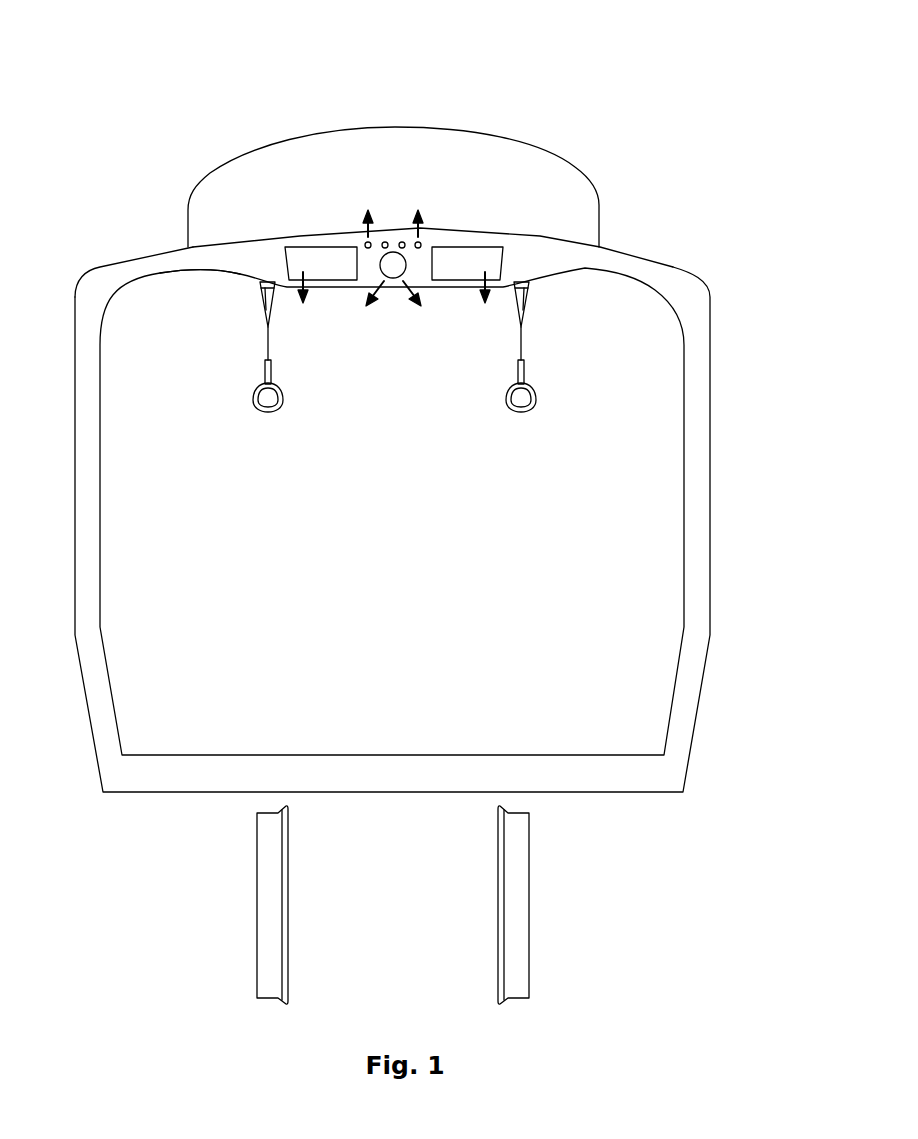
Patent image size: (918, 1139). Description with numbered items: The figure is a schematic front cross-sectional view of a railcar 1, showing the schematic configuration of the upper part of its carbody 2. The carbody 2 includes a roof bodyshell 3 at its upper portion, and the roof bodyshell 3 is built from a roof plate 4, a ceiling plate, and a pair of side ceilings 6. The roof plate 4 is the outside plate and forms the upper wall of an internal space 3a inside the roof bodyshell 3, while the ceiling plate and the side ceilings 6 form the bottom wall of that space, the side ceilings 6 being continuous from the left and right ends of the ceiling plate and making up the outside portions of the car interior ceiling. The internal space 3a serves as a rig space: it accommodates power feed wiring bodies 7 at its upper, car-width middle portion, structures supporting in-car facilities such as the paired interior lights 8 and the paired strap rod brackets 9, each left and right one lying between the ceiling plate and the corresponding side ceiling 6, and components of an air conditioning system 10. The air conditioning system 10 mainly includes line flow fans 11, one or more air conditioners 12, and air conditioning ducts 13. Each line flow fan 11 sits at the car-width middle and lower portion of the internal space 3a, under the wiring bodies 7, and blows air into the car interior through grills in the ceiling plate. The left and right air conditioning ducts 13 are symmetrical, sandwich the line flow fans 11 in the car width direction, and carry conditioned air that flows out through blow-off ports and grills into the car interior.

The railcar 1 is at (672, 120).
The carbody 2 is at (712, 295).
The roof bodyshell 3 is at (648, 255).
The internal space 3a is at (227, 257).
The roof plate 4 is at (138, 257).
The side ceiling 6 is at (178, 272).
The power feed wiring body 7 is at (393, 233).
The interior light 8 is at (261, 285).
The strap rod bracket 9 is at (262, 307).
The air conditioning system 10 is at (387, 302).
The line flow fan 11 is at (407, 267).
The air conditioner 12 is at (263, 167).
The air conditioning duct 13 is at (340, 282).